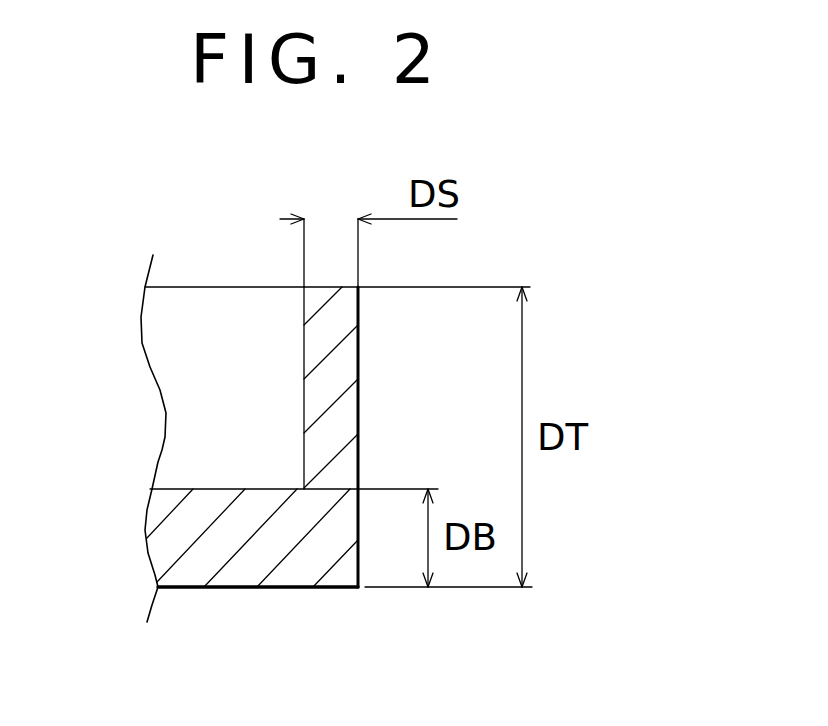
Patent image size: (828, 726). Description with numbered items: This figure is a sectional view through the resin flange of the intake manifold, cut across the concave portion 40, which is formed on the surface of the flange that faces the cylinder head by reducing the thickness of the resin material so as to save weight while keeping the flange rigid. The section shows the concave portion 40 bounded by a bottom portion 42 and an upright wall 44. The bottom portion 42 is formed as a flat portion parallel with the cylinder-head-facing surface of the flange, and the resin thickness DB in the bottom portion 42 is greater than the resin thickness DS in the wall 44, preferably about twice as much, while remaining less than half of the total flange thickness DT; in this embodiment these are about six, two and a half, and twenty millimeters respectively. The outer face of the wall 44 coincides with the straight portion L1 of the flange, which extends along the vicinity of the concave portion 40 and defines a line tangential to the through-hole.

The concave portion 40 is at (205, 393).
The bottom portion 42 is at (186, 489).
The wall 44 is at (304, 350).
The straight portion L1 is at (358, 375).